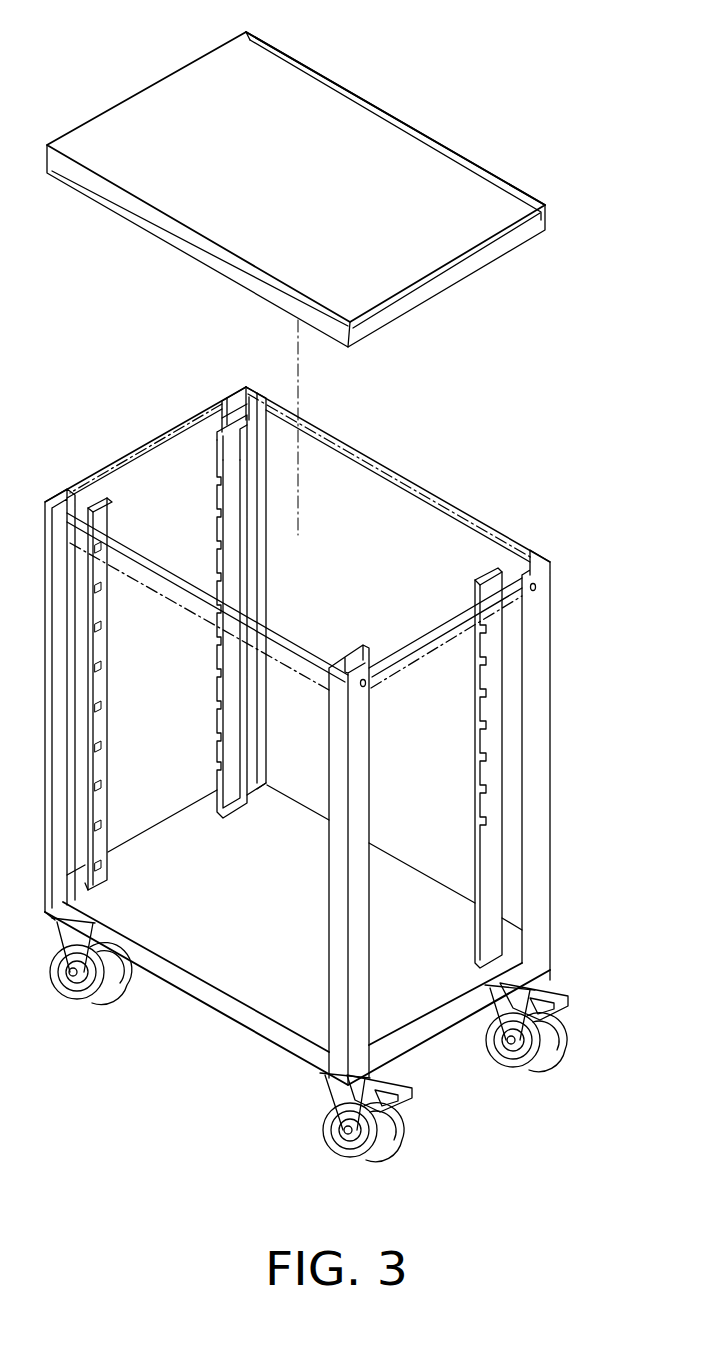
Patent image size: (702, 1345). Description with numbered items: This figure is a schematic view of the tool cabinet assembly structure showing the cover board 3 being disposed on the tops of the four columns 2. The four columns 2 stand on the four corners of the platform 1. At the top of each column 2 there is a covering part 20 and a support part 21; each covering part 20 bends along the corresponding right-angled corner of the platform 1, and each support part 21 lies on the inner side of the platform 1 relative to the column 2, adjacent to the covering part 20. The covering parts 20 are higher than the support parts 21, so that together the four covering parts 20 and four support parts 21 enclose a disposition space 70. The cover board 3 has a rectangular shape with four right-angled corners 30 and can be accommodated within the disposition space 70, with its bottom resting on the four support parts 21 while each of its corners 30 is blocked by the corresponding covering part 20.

The platform 1 is at (237, 975).
The column 2 is at (184, 608).
The cover board 3 is at (417, 165).
The covering part 20 is at (238, 405).
The support part 21 is at (220, 425).
The right-angled corner 30 is at (250, 37).
The disposition space 70 is at (367, 480).